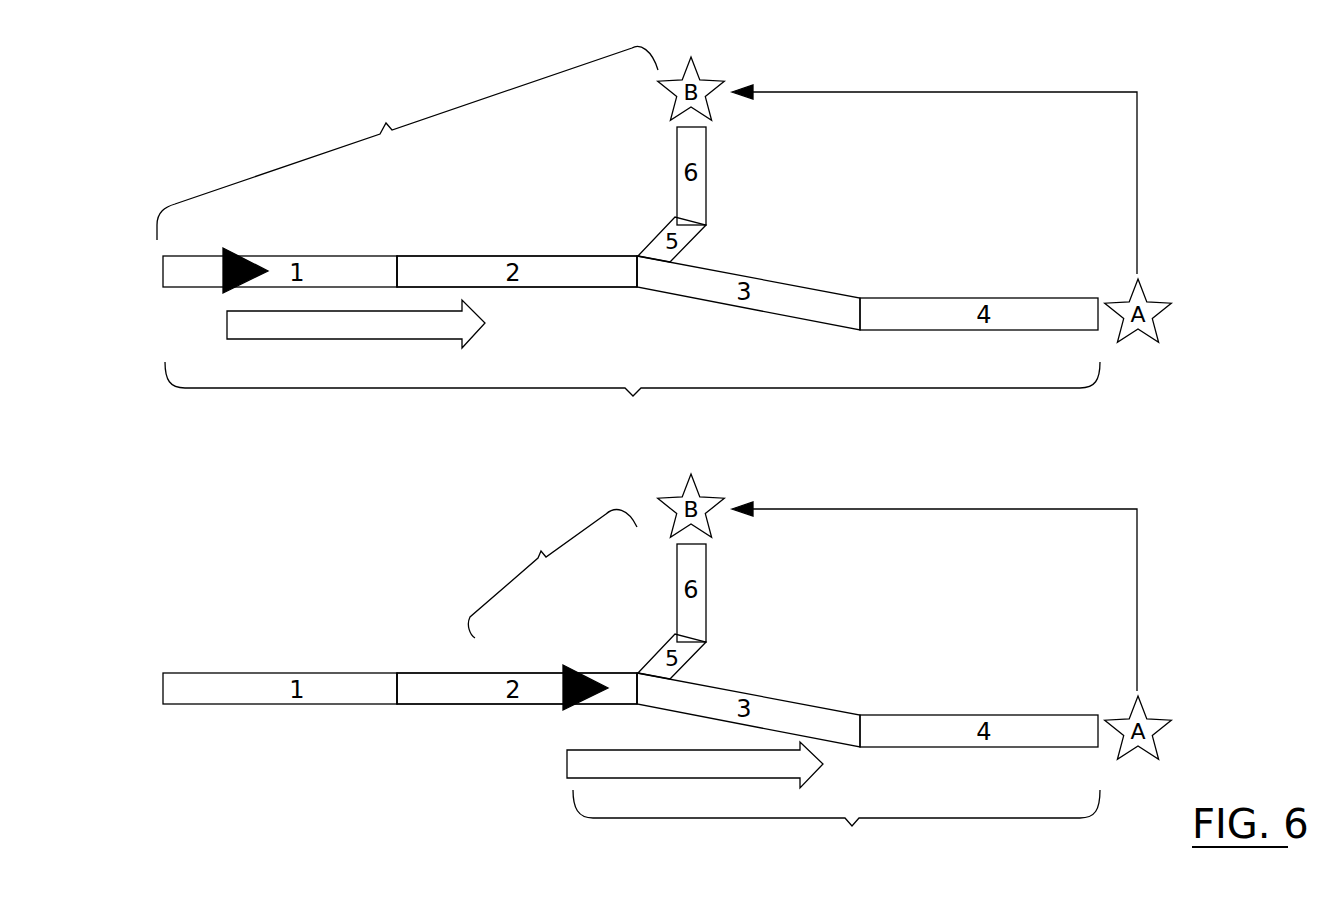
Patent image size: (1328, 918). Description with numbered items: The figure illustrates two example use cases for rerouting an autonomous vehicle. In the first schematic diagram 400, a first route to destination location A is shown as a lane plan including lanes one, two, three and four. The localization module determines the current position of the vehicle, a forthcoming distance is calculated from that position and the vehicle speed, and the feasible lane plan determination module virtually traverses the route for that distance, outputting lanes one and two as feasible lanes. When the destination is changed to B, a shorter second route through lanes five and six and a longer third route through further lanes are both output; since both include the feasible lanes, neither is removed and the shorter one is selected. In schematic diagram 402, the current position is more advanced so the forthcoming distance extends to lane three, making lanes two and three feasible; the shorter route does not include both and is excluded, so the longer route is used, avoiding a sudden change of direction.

The first schematic diagram 400 is at (280, 108).
The schematic diagram 402 is at (276, 532).